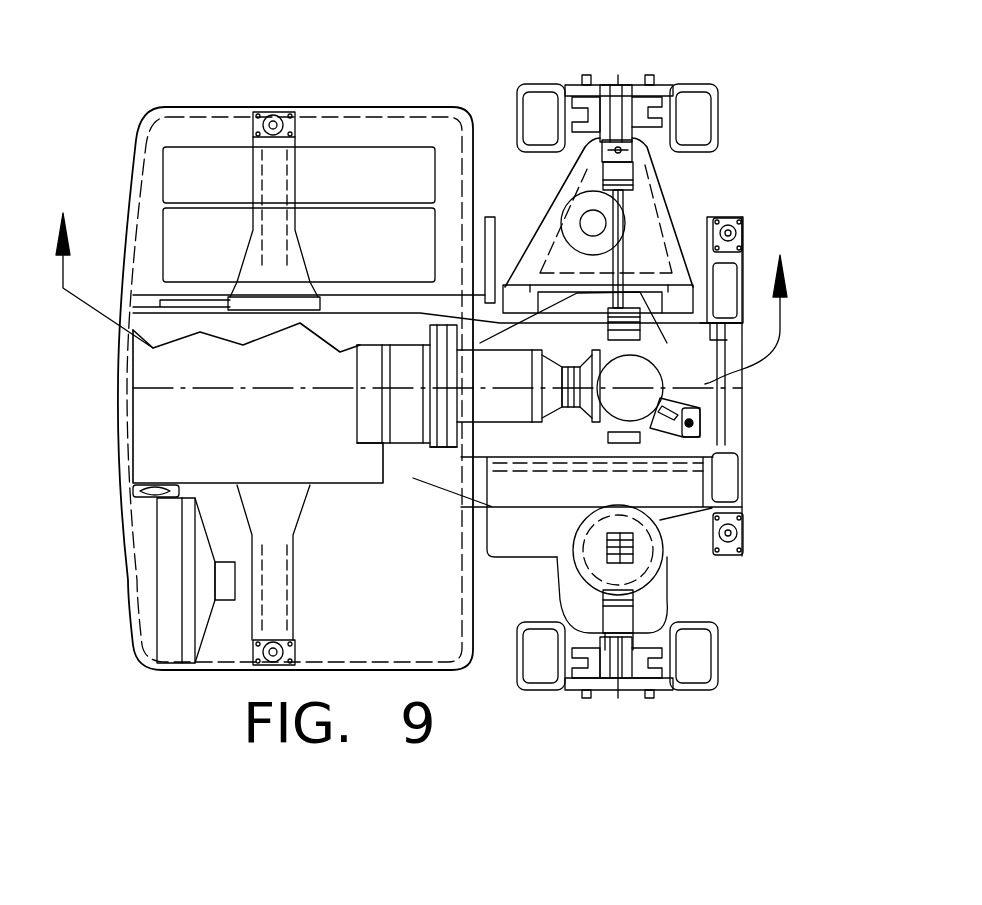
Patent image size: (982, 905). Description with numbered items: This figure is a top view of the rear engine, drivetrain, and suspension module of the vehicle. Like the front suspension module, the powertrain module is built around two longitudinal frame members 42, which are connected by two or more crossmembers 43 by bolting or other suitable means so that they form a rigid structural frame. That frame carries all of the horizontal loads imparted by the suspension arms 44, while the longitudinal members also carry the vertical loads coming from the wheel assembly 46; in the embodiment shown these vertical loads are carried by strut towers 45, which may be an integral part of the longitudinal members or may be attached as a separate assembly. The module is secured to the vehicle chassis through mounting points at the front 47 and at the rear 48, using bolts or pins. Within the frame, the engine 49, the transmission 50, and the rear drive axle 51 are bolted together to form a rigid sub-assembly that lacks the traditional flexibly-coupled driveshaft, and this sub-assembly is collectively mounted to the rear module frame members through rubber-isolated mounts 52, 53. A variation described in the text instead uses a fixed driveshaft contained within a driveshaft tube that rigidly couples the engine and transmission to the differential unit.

The longitudinal frame members 42 is at (468, 478).
The crossmembers 43 is at (742, 397).
The suspension arms 44 is at (665, 203).
The strut towers 45 is at (680, 543).
The wheel assembly 46 is at (718, 687).
The front mounting points 47 is at (742, 238).
The rear mounting points 48 is at (268, 112).
The engine 49 is at (178, 448).
The transmission 50 is at (400, 410).
The rear drive axle 51 is at (632, 378).
The rubber-isolated mount 52 is at (700, 413).
The rubber-isolated mount 53 is at (143, 491).